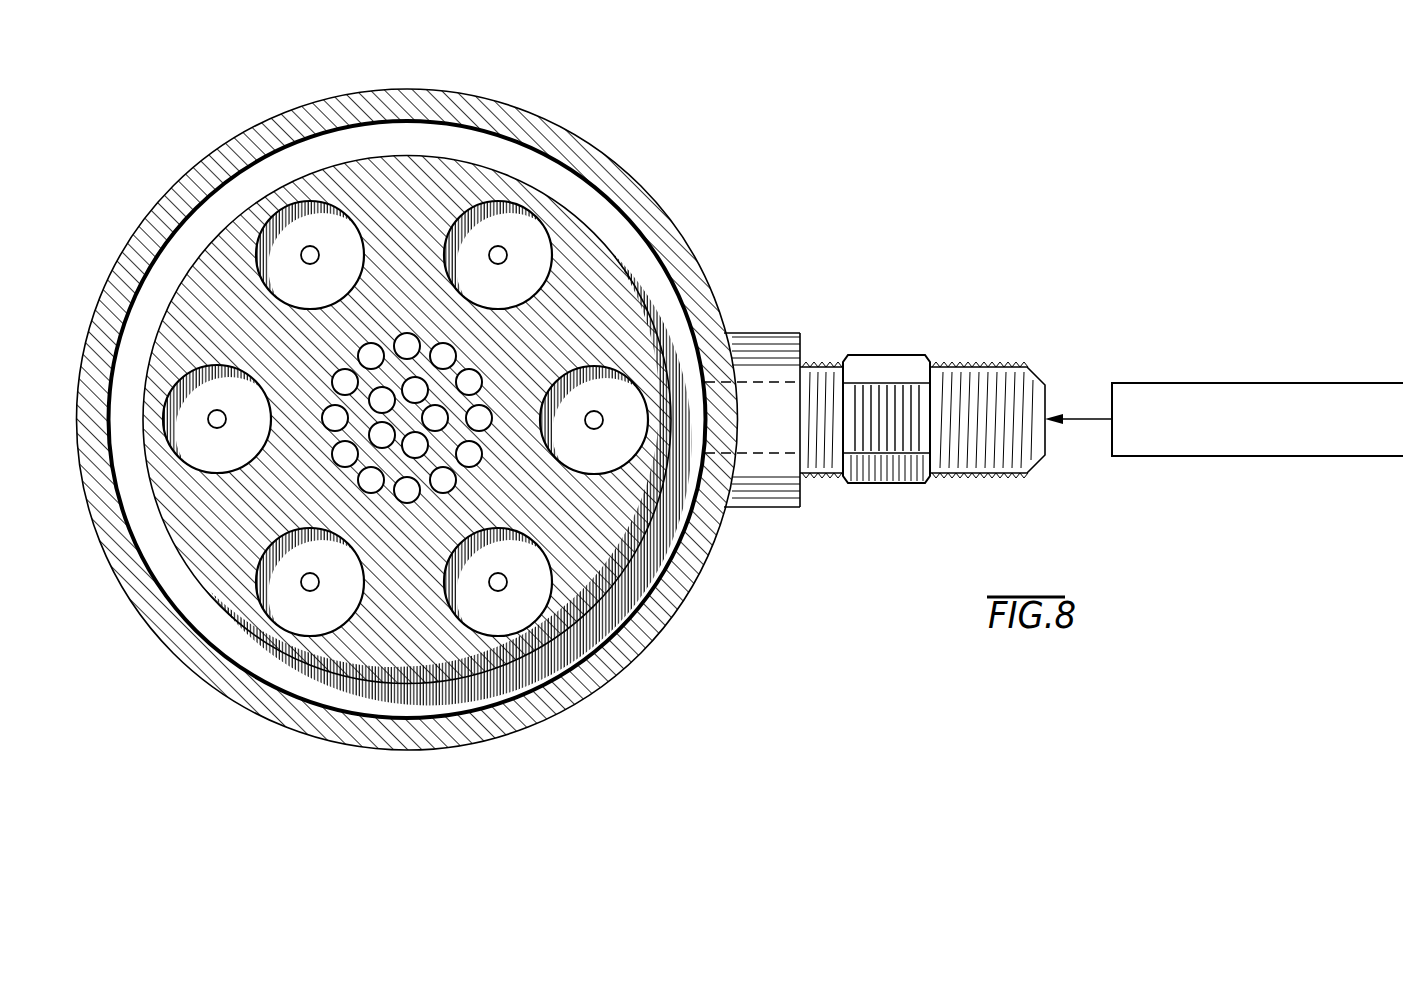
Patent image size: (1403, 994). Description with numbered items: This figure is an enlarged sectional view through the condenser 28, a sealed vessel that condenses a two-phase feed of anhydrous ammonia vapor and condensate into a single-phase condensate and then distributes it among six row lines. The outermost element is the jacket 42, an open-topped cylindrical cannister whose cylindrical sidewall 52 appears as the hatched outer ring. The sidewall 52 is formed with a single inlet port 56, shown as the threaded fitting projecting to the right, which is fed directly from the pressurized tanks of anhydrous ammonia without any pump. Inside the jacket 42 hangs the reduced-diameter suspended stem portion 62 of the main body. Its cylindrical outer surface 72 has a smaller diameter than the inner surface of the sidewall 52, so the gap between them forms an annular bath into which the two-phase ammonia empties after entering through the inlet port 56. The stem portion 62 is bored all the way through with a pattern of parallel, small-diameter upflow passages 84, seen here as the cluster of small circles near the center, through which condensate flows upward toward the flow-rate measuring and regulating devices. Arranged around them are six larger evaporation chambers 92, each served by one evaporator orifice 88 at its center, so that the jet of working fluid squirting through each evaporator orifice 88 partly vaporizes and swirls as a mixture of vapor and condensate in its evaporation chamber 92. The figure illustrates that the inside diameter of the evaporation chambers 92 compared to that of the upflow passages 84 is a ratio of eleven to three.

The condenser 28 is at (645, 123).
The jacket 42 is at (686, 240).
The cylindrical sidewall 52 is at (683, 262).
The inlet port 56 is at (905, 365).
The suspended stem portion 62 is at (475, 456).
The cylindrical outer surface 72 is at (640, 600).
The upflow passages 84 is at (655, 638).
The evaporator orifice 88 is at (306, 250).
The evaporation chamber 92 is at (360, 242).